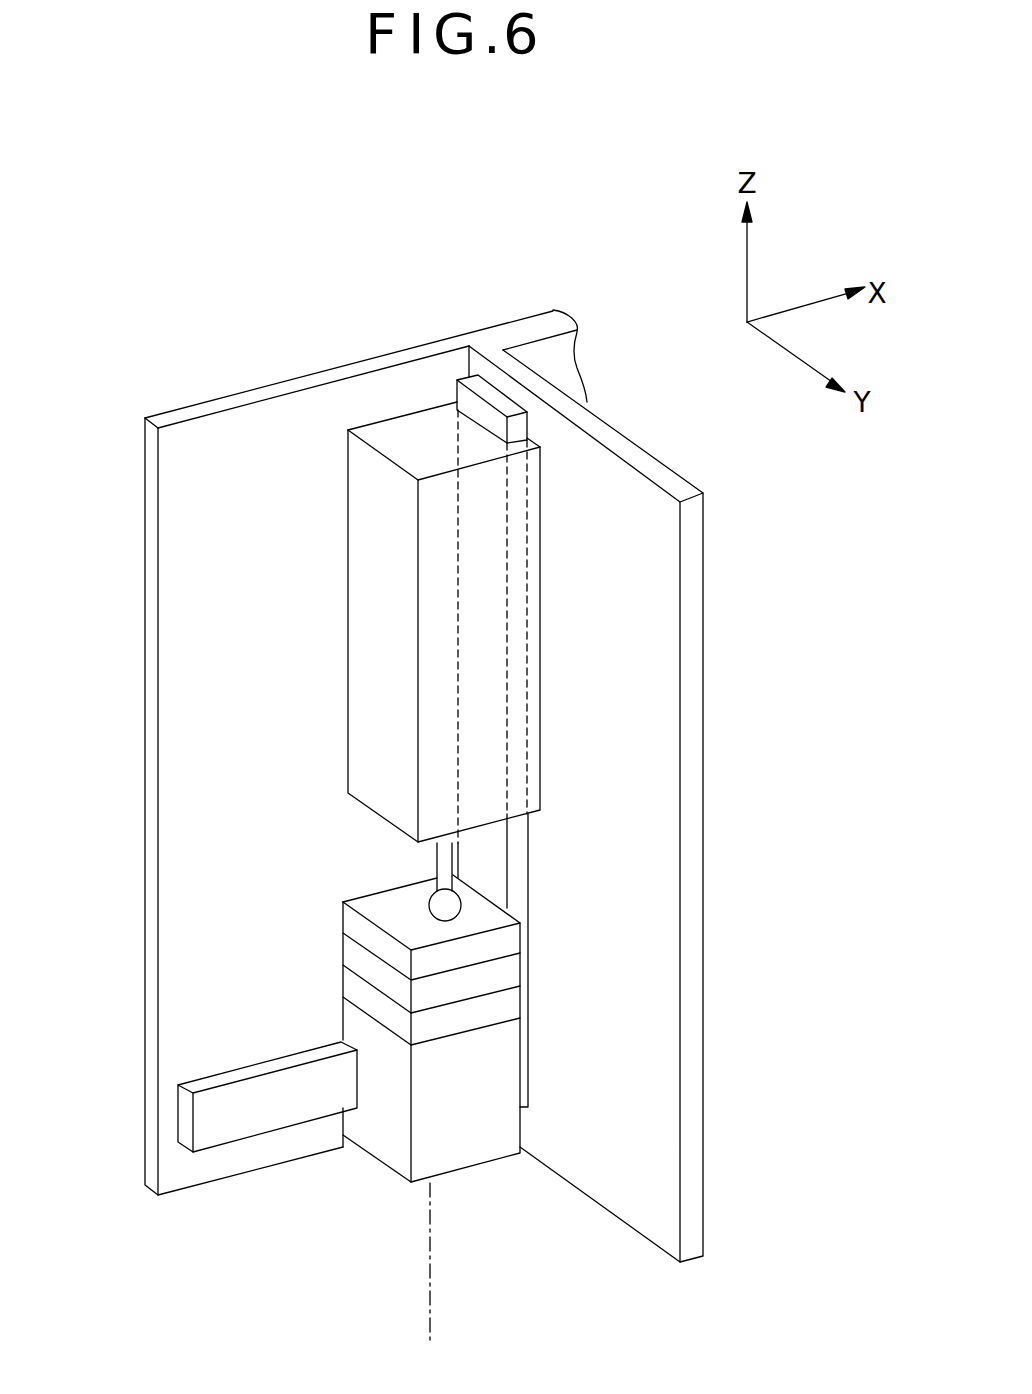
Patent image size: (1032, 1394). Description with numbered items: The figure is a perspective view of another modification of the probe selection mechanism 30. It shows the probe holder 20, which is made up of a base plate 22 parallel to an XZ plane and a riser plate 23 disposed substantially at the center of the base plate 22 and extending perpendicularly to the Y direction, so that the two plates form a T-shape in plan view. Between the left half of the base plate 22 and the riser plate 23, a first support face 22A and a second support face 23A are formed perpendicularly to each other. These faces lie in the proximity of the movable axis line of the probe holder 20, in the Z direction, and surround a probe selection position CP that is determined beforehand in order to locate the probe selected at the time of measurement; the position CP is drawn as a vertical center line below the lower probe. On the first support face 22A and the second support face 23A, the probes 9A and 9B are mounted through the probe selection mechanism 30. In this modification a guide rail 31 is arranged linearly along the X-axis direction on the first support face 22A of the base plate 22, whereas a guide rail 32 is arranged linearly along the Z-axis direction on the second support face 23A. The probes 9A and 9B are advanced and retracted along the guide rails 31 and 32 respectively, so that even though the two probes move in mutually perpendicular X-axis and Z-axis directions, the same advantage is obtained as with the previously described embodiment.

The probe holder 20 is at (498, 256).
The base plate 22 is at (400, 348).
The first support face 22A is at (190, 700).
The riser plate 23 is at (522, 367).
The second support face 23A is at (655, 583).
The probe selection mechanism 30 is at (275, 1274).
The guide rail 31 is at (238, 1128).
The guide rail 32 is at (515, 427).
The probe 9A is at (483, 1147).
The probe 9B is at (540, 655).
The probe selection position CP is at (430, 1278).